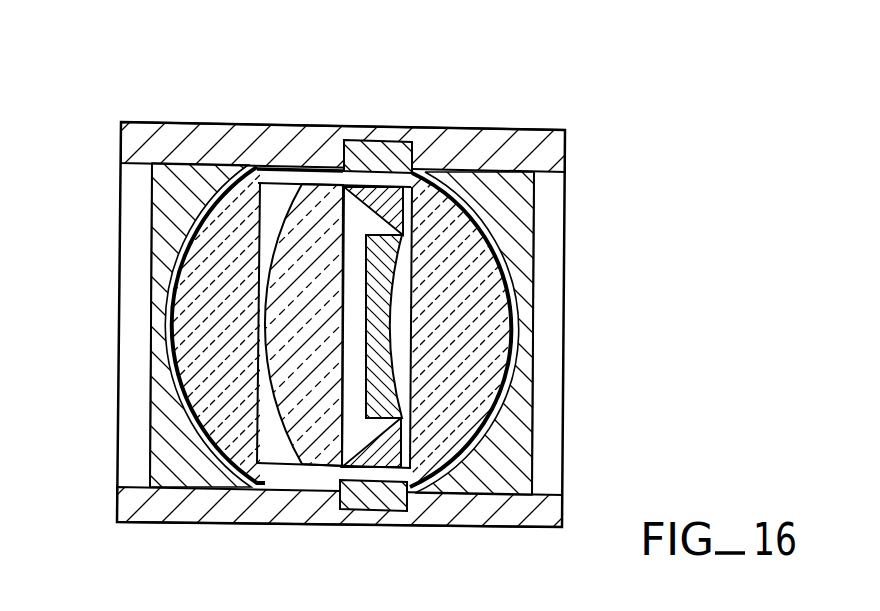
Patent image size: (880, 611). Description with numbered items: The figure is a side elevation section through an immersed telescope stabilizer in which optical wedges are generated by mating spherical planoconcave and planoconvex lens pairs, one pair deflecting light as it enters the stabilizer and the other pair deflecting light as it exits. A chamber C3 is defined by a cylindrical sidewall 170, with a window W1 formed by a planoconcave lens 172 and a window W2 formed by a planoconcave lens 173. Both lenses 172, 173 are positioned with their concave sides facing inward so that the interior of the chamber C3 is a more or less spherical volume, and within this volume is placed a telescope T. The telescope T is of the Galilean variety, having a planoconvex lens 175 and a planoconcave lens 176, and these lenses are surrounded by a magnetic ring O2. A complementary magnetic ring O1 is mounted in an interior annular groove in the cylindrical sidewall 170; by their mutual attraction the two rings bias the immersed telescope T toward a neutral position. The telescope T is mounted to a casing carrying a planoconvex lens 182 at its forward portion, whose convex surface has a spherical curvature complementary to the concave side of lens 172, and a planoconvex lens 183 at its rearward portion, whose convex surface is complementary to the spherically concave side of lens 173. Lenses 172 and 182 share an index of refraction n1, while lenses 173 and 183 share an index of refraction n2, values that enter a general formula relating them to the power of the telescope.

The cylindrical sidewall 170 is at (537, 520).
The planoconcave lens 172 is at (160, 434).
The planoconcave lens 173 is at (533, 241).
The planoconvex lens 175 is at (327, 293).
The planoconcave lens 176 is at (370, 355).
The planoconvex lens 182 is at (238, 293).
The planoconvex lens 183 is at (469, 293).
The chamber C3 is at (218, 155).
The magnetic ring O1 is at (393, 503).
The magnetic ring O2 is at (413, 172).
The window W1 is at (152, 220).
The window W2 is at (533, 463).
The telescope T is at (355, 468).
The index of refraction n1 is at (168, 473).
The index of refraction n2 is at (518, 480).